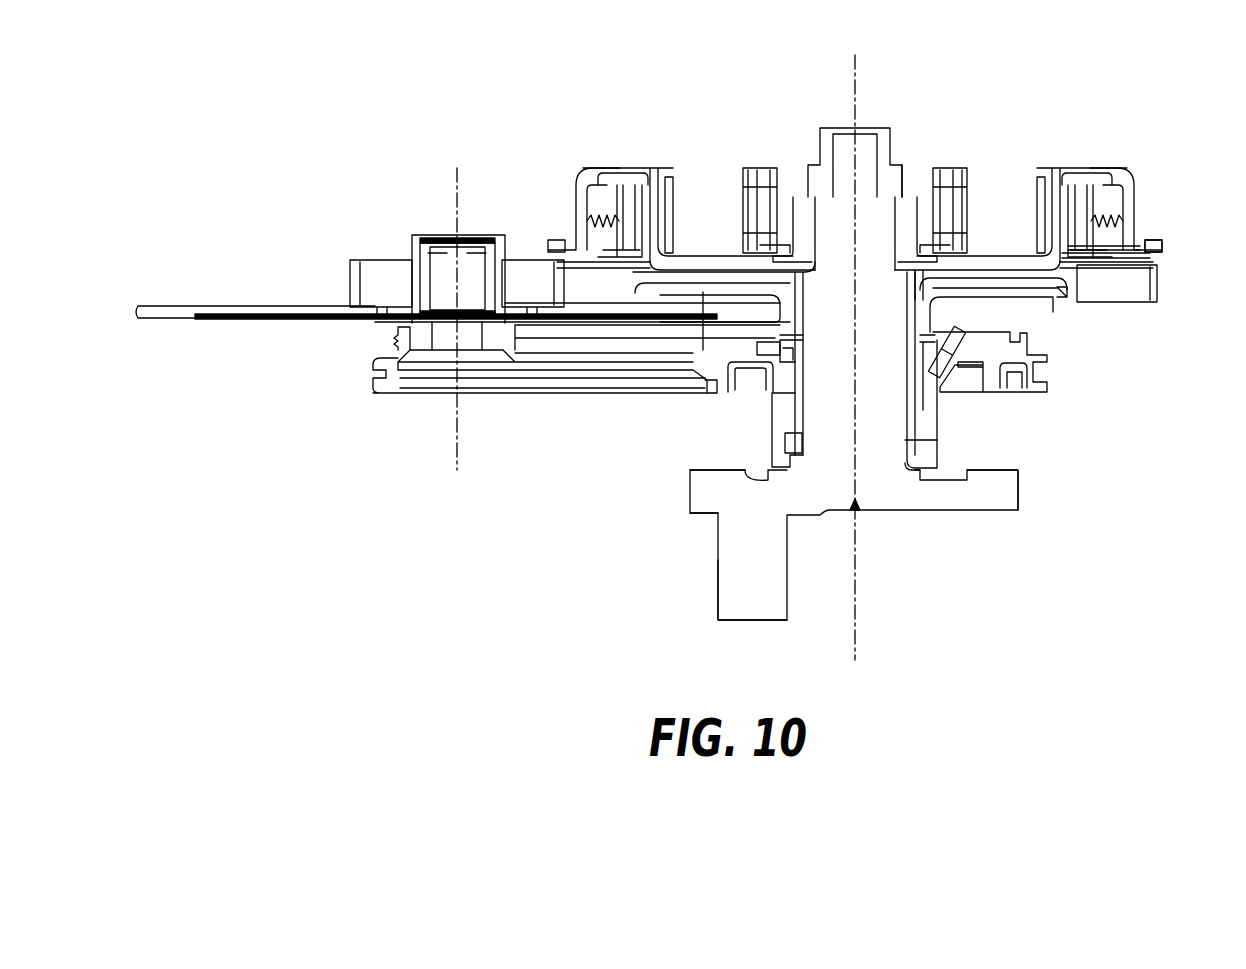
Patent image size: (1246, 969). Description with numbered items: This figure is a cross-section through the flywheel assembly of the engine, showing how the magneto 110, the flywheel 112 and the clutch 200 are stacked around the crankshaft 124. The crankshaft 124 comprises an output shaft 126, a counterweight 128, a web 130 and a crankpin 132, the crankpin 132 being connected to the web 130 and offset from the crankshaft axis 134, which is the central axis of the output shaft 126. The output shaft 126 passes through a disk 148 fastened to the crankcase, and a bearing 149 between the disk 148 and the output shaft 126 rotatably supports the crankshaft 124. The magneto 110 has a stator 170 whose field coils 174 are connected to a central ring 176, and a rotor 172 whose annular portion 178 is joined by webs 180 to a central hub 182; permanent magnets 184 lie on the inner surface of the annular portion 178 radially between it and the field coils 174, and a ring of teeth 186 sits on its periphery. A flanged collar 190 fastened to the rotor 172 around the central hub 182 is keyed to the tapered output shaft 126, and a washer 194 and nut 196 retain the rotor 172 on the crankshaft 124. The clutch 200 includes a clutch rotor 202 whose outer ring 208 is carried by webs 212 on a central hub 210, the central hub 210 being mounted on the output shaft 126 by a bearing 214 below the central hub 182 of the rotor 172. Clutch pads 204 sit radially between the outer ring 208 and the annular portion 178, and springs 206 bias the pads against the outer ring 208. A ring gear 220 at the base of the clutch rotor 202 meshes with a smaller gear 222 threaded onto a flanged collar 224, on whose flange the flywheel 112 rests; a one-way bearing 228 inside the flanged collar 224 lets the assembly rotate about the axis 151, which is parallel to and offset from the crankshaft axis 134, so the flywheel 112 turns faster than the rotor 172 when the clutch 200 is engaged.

The magneto 110 is at (1145, 172).
The flywheel 112 is at (168, 315).
The crankshaft 124 is at (829, 545).
The output shaft 126 is at (878, 430).
The counterweight 128 is at (1002, 500).
The web 130 is at (698, 502).
The crankpin 132 is at (730, 610).
The crankshaft axis 134 is at (856, 92).
The disk 148 is at (590, 380).
The bearing 149 is at (795, 418).
The axis 151 is at (462, 172).
The stator 170 is at (1010, 158).
The rotor 172 is at (1118, 160).
The field coils 174 is at (691, 219).
The central ring 176 is at (790, 195).
The annular portion 178 is at (593, 172).
The webs 180 is at (728, 262).
The central hub 182 is at (810, 255).
The permanent magnets 184 is at (668, 193).
The ring of teeth 186 is at (1147, 237).
The flanged collar 190 is at (914, 230).
The washer 194 is at (888, 190).
The nut 196 is at (832, 142).
The clutch 200 is at (1058, 314).
The clutch rotor 202 is at (1058, 290).
The clutch pads 204 is at (625, 200).
The springs 206 is at (588, 220).
The outer ring 208 is at (1073, 247).
The central hub 210 is at (925, 318).
The webs 212 is at (703, 295).
The bearing 214 is at (805, 333).
The ring gear 220 is at (1137, 290).
The gear 222 is at (368, 270).
The flanged collar 224 is at (413, 247).
The one-way bearing 228 is at (445, 258).